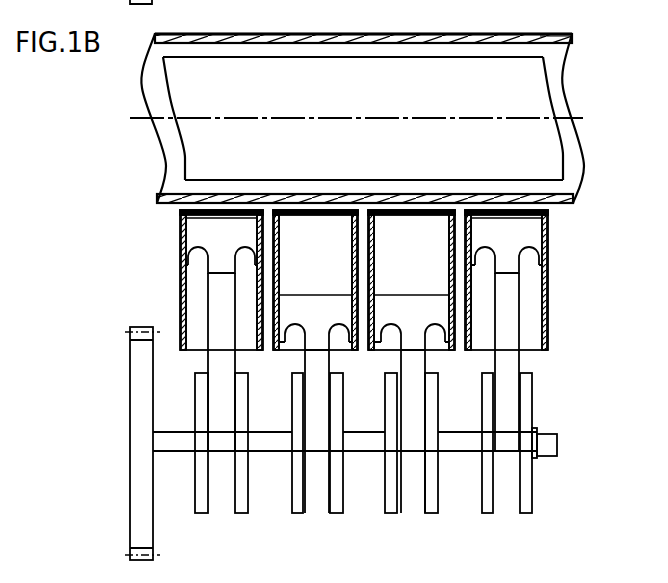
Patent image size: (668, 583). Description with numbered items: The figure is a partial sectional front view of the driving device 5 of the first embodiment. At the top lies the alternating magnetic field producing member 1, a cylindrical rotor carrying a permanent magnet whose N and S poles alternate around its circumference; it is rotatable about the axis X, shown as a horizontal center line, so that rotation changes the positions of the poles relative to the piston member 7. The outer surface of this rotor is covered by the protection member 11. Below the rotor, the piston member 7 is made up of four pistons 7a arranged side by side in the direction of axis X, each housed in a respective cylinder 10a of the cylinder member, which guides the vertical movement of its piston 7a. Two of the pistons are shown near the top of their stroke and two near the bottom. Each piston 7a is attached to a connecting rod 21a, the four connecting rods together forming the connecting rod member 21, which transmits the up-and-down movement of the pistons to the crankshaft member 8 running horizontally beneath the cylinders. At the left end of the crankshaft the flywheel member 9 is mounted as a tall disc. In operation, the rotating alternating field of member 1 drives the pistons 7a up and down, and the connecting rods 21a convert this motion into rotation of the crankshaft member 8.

The alternating magnetic field producing member 1 is at (520, 88).
The driving device 5 is at (587, 43).
The piston member 7 is at (361, 0).
The piston 7a is at (200, 243).
The crankshaft member 8 is at (548, 444).
The flywheel member 9 is at (143, 401).
The cylinder 10a is at (186, 261).
The protection member 11 is at (533, 33).
The connecting rod member 21 is at (396, 462).
The connecting rod 21a is at (640, 535).
The axis X is at (368, 120).